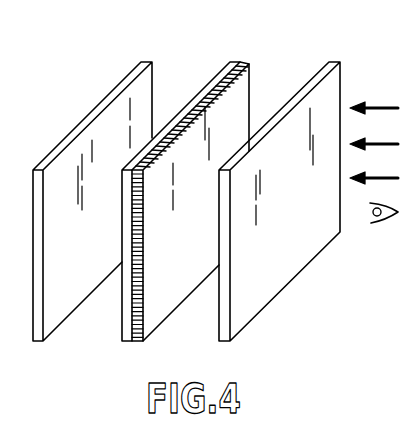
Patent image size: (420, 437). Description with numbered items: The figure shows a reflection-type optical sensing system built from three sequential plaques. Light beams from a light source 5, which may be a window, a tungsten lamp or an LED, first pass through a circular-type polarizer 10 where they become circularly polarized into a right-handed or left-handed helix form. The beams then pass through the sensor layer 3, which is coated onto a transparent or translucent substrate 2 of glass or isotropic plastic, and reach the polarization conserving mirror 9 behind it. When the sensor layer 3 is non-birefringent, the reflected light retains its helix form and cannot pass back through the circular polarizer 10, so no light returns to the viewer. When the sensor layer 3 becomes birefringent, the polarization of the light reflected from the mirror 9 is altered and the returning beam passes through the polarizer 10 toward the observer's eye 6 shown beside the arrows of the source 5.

The polarization conserving mirror 9 is at (152, 62).
The substrate 2 is at (229, 63).
The sensor layer 3 is at (248, 63).
The circular-type polarizer 10 is at (359, 49).
The light source 5 is at (384, 115).
The observer eye 6 is at (384, 224).